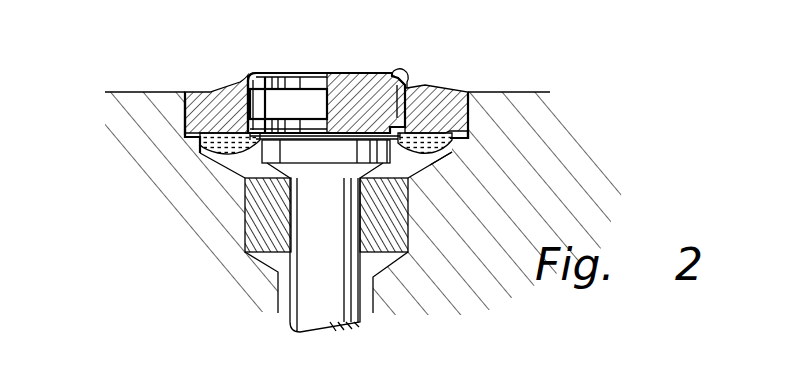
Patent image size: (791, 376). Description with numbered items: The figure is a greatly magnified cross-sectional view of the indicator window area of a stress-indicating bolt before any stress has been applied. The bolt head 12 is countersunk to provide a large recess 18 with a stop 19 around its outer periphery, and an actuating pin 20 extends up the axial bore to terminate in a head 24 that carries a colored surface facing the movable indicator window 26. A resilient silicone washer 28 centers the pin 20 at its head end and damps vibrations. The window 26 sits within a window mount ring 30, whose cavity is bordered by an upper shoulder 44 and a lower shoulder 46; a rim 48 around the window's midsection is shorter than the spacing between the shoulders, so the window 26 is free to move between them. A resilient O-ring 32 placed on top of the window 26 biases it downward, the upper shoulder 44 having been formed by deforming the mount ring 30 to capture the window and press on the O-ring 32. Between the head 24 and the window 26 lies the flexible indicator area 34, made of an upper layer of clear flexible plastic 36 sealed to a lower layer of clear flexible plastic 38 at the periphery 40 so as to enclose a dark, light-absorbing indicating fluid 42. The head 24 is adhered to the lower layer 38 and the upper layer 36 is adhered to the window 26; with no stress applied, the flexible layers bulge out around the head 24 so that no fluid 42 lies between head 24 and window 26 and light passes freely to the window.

The head 12 is at (145, 92).
The recess 18 is at (185, 125).
The stop 19 is at (183, 151).
The actuating pin 20 is at (315, 287).
The head 24 is at (258, 223).
The indicator window 26 is at (333, 72).
The resilient silicone washer 28 is at (245, 254).
The window mount ring 30 is at (425, 86).
The resilient O-ring 32 is at (266, 73).
The flexible indicator area 34 is at (450, 153).
The upper layer of clear, flexible plastic 36 is at (493, 92).
The lower layer of clear, flexible plastic 38 is at (430, 162).
The periphery 40 is at (468, 140).
The indicating fluid 42 is at (258, 153).
The upper shoulder 44 is at (398, 74).
The lower shoulder 46 is at (430, 122).
The rim 48 is at (233, 86).